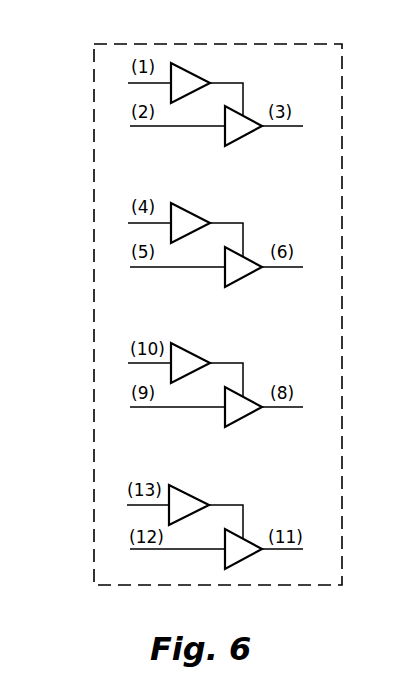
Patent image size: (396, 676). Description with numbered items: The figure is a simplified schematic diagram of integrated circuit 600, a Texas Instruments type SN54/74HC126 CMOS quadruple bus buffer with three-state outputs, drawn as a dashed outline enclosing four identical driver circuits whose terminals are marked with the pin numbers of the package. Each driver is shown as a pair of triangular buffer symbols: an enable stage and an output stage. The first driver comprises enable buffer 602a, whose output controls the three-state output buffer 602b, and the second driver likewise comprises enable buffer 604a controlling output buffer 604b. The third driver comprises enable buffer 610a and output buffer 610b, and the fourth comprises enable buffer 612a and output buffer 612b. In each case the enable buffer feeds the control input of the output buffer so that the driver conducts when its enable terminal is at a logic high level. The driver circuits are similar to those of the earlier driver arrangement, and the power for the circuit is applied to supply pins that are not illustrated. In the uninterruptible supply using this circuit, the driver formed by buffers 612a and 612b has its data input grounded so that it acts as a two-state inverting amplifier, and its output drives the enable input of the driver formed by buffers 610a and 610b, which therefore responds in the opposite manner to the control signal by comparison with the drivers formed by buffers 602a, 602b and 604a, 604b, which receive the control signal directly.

The integrated circuit 600 is at (343, 353).
The enable buffer of driver 602 602a is at (200, 79).
The 3-state output buffer of driver 602 602b is at (246, 134).
The enable buffer of driver 604 604a is at (198, 218).
The 3-state output buffer of driver 604 604b is at (246, 275).
The enable buffer of driver 610 610a is at (193, 355).
The 3-state output buffer of driver 610 610b is at (243, 415).
The enable buffer of driver 612 612a is at (192, 497).
The 3-state output buffer of driver 612 612b is at (246, 556).